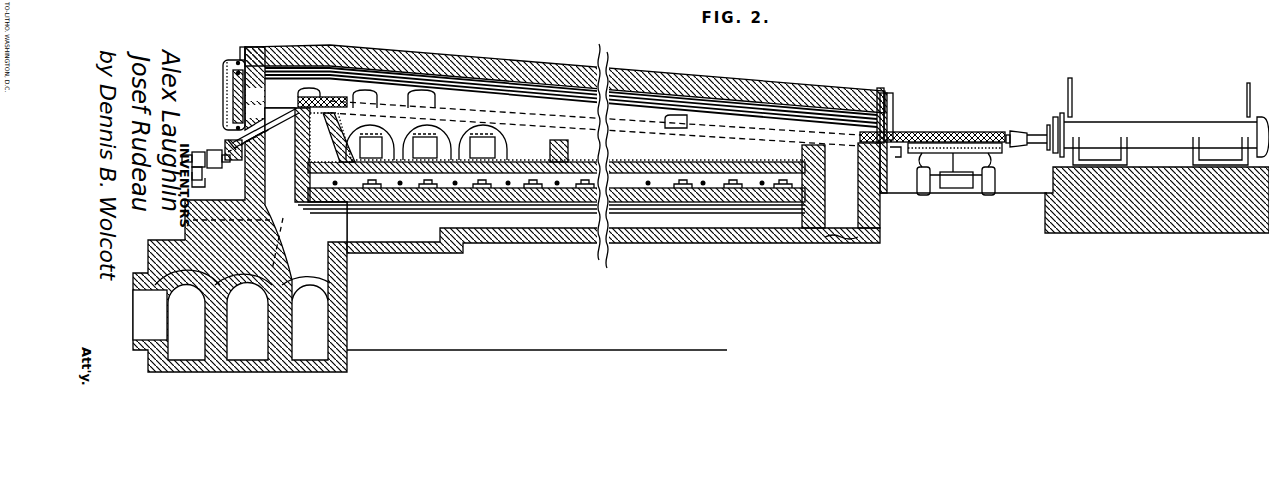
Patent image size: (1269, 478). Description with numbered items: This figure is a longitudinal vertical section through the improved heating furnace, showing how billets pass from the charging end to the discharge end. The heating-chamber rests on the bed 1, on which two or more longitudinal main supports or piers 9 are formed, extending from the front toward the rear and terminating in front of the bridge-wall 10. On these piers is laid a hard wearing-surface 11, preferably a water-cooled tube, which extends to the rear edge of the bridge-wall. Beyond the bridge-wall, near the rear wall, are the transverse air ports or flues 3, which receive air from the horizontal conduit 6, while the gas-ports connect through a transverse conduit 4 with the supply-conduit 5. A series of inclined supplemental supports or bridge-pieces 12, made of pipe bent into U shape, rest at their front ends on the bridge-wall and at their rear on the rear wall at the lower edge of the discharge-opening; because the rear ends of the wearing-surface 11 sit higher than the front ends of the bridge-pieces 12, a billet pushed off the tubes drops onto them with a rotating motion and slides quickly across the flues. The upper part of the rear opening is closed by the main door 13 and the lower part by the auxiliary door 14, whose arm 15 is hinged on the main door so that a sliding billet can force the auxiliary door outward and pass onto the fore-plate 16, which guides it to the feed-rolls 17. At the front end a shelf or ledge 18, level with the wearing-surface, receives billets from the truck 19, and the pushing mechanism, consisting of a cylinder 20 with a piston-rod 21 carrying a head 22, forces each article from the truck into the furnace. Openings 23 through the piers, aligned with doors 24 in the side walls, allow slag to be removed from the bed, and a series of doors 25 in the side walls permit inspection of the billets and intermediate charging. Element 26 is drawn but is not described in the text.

The bed 1 is at (652, 165).
The air ports or flues 3 is at (270, 204).
The transverse conduit 4 is at (242, 315).
The supply-conduit 5 is at (150, 315).
The horizontal conduit 6 is at (506, 240).
The main supports or piers 9 is at (706, 160).
The bridge-wall 10 is at (331, 114).
The wearing-surface 11 is at (542, 114).
The inclined supplemental supports or bridge-pieces 12 is at (262, 127).
The main door 13 is at (255, 88).
The auxiliary door 14 is at (255, 123).
The arm 15 is at (226, 96).
The fore-plate 16 is at (232, 147).
The feed-rolls 17 is at (206, 171).
The shelf or ledge 18 is at (953, 143).
The truck 19 is at (955, 169).
The cylinder 20 is at (1157, 155).
The piston-rod 21 is at (1036, 144).
The head 22 is at (1009, 130).
The openings 23 is at (403, 142).
The doors 24 is at (427, 146).
The doors 25 is at (321, 92).
The peephole 26 is at (676, 122).